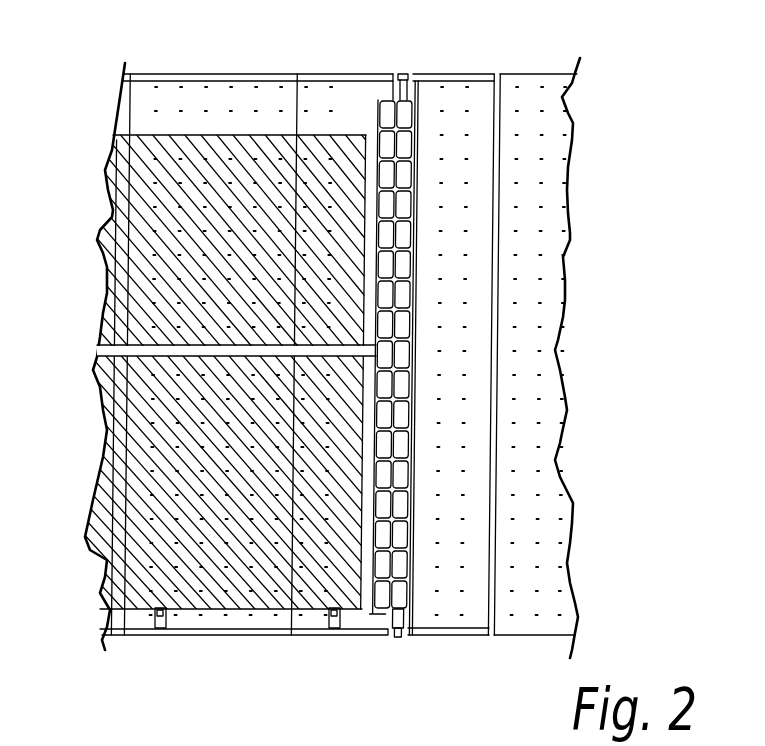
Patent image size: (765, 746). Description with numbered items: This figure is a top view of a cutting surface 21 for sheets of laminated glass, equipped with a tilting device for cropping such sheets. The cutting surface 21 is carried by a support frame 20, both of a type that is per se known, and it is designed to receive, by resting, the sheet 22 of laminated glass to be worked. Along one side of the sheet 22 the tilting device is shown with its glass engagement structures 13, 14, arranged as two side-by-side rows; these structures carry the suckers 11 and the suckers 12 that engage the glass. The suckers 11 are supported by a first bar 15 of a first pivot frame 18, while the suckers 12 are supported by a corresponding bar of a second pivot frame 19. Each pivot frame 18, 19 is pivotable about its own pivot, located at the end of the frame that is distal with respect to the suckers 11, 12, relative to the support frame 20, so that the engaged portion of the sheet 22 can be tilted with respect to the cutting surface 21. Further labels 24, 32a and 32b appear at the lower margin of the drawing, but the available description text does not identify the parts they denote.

The suckers 11 is at (387, 96).
The suckers 12 is at (420, 128).
The glass engagement structure 13 is at (386, 202).
The glass engagement structure 14 is at (402, 176).
The first bar 15 is at (397, 740).
The first pivot frame 18 is at (357, 637).
The second pivot frame 19 is at (432, 638).
The support frame 20 is at (543, 440).
The cutting surface 21 is at (572, 297).
The sheet 22 is at (195, 263).
The lower element 24 is at (502, 740).
The lower element a 32a is at (355, 739).
The lower element b 32b is at (455, 738).